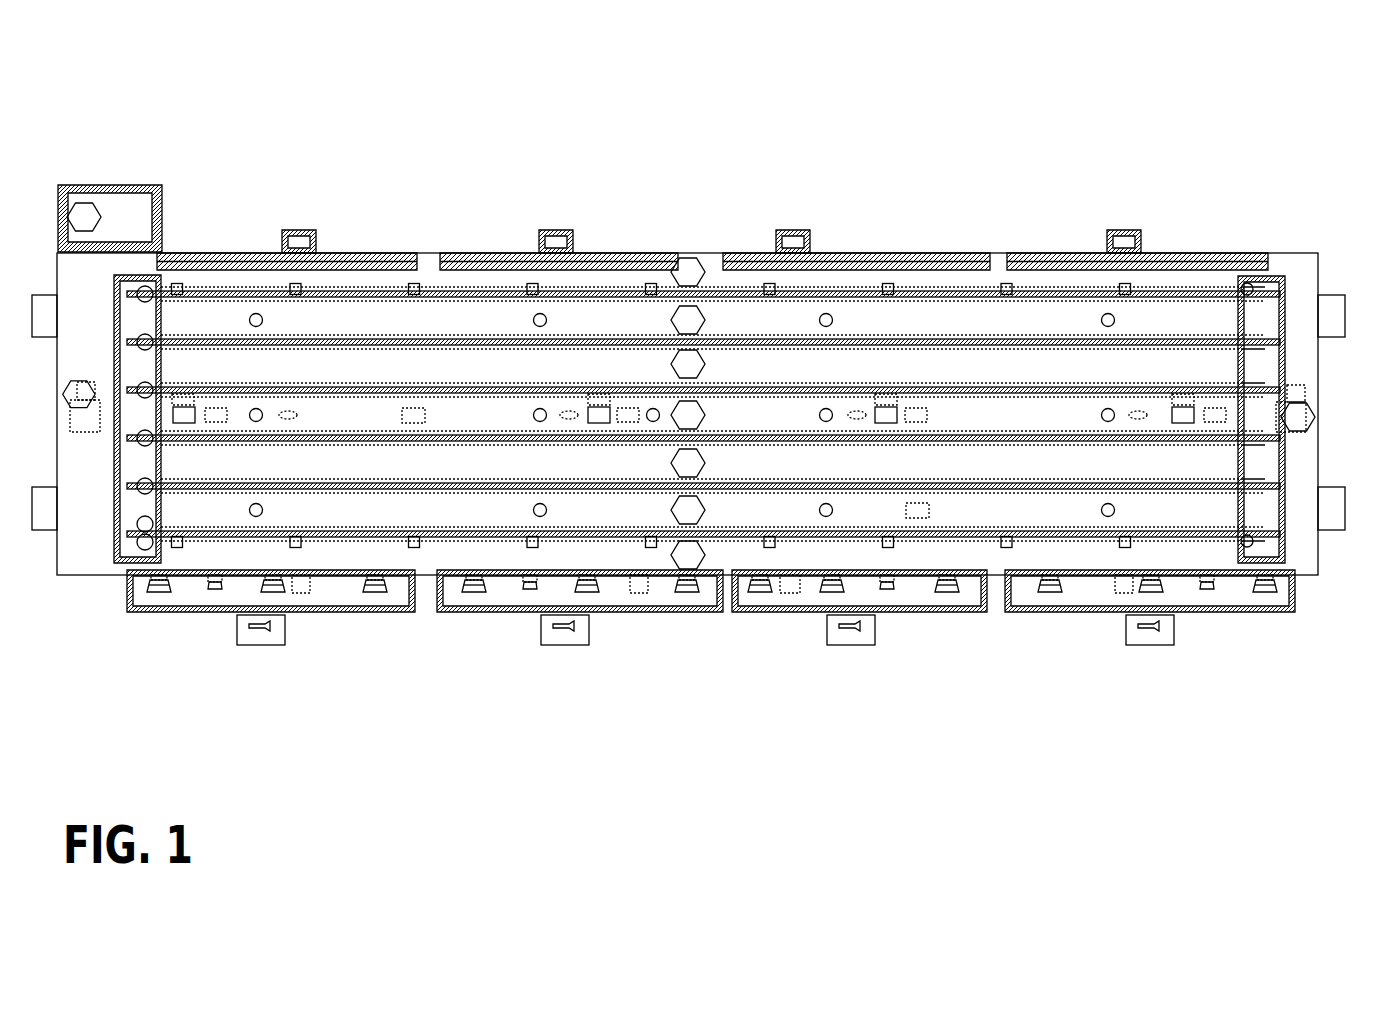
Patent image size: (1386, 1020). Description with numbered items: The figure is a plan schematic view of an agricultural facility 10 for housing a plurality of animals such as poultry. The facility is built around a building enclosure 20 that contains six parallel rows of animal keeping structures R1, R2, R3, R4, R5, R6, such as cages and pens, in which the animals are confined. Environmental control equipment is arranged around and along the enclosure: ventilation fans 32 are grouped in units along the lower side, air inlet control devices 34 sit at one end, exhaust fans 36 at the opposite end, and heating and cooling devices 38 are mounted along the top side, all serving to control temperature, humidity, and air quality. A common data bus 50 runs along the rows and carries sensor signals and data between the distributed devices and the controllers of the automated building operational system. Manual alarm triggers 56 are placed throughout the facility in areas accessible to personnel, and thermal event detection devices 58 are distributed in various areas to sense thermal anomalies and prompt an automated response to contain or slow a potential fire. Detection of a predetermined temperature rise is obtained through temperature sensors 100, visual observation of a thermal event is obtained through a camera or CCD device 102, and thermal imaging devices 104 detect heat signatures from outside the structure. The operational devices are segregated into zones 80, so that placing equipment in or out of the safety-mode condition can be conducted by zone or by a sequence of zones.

The agricultural facility 10 is at (1200, 141).
The building enclosure 20 is at (427, 253).
The ventilation fans 32 is at (162, 593).
The air inlet control devices 34 is at (1345, 317).
The exhaust fans 36 is at (40, 295).
The heating and cooling devices 38 is at (316, 238).
The common data bus 50 is at (992, 290).
The manual alarm triggers 56 is at (82, 207).
The thermal event detection devices 58 is at (178, 397).
The zones 80 is at (163, 213).
The temperature sensor 100 is at (262, 320).
The thermal imaging device, camera, or CCD device 102 is at (414, 406).
The thermal imaging device 104 is at (250, 645).
The row of animal keeping structures R1 is at (1270, 289).
The row of animal keeping structures R2 is at (1268, 349).
The row of animal keeping structures R3 is at (1268, 384).
The row of animal keeping structures R4 is at (1268, 445).
The row of animal keeping structures R5 is at (1268, 480).
The row of animal keeping structures R6 is at (1268, 541).